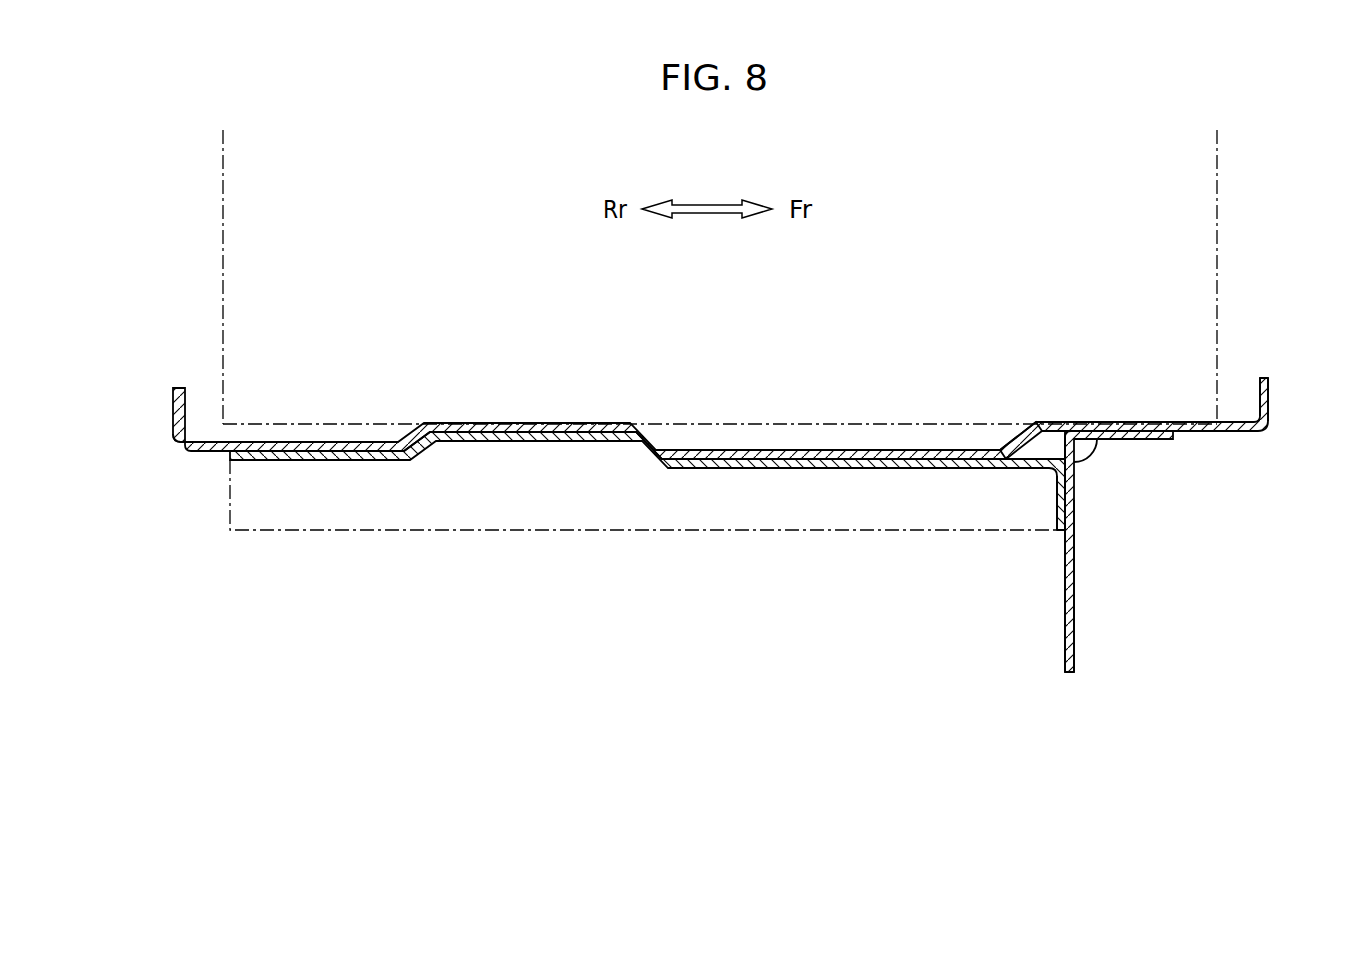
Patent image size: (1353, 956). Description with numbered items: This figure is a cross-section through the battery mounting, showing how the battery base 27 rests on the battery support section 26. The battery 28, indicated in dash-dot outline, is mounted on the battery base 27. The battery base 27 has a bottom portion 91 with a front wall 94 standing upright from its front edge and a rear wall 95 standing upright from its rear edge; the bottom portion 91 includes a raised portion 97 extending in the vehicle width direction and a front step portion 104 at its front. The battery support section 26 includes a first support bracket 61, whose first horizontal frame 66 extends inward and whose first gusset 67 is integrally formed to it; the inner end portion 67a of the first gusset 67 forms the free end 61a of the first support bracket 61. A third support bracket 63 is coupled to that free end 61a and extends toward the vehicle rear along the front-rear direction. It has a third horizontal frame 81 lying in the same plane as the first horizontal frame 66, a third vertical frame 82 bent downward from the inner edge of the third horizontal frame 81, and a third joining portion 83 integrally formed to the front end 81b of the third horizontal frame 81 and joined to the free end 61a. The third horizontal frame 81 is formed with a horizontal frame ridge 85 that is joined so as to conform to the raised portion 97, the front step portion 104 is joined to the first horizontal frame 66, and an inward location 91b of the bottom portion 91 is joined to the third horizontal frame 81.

The battery support section 26 is at (1076, 600).
The battery base 27 is at (172, 408).
The battery 28 is at (222, 218).
The first support bracket 61 is at (1065, 573).
The free end 61a is at (1093, 437).
The third support bracket 63 is at (709, 449).
The first horizontal frame 66 is at (1155, 424).
The first gusset 67 is at (1065, 636).
The inner end portion 67a is at (1123, 406).
The third horizontal frame 81 is at (790, 450).
The front end 81b is at (1033, 432).
The third vertical frame 82 is at (727, 532).
The third joining portion 83 is at (1077, 465).
The horizontal frame ridge 85 is at (512, 430).
The bottom portion 91 is at (647, 436).
The inward location 91b is at (862, 450).
The front wall 94 is at (1269, 390).
The rear wall 95 is at (172, 425).
The raised portion 97 is at (575, 428).
The front step portion 104 is at (1067, 452).